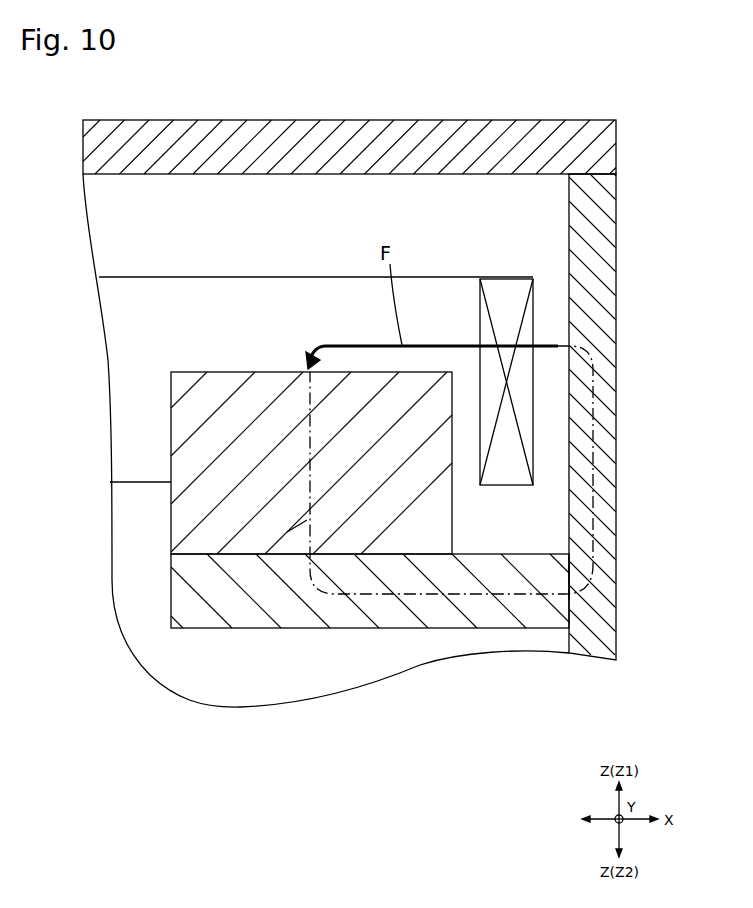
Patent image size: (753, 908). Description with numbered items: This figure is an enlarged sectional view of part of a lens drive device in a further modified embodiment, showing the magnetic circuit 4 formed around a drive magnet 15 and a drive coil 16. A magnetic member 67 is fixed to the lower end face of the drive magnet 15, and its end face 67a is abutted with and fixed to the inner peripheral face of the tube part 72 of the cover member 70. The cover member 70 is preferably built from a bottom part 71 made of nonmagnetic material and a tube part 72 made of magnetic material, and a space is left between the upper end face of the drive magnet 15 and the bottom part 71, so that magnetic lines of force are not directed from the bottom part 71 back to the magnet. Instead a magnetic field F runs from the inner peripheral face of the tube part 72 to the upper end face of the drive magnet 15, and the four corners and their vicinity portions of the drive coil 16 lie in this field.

The drive mechanism 4 is at (503, 254).
The drive magnet 15 is at (452, 530).
The drive coil 16 is at (533, 413).
The magnetic member 67 is at (301, 628).
The end face 67a is at (570, 576).
The cover member 70 is at (399, 390).
The bottom part 71 is at (617, 152).
The tube part 72 is at (620, 417).